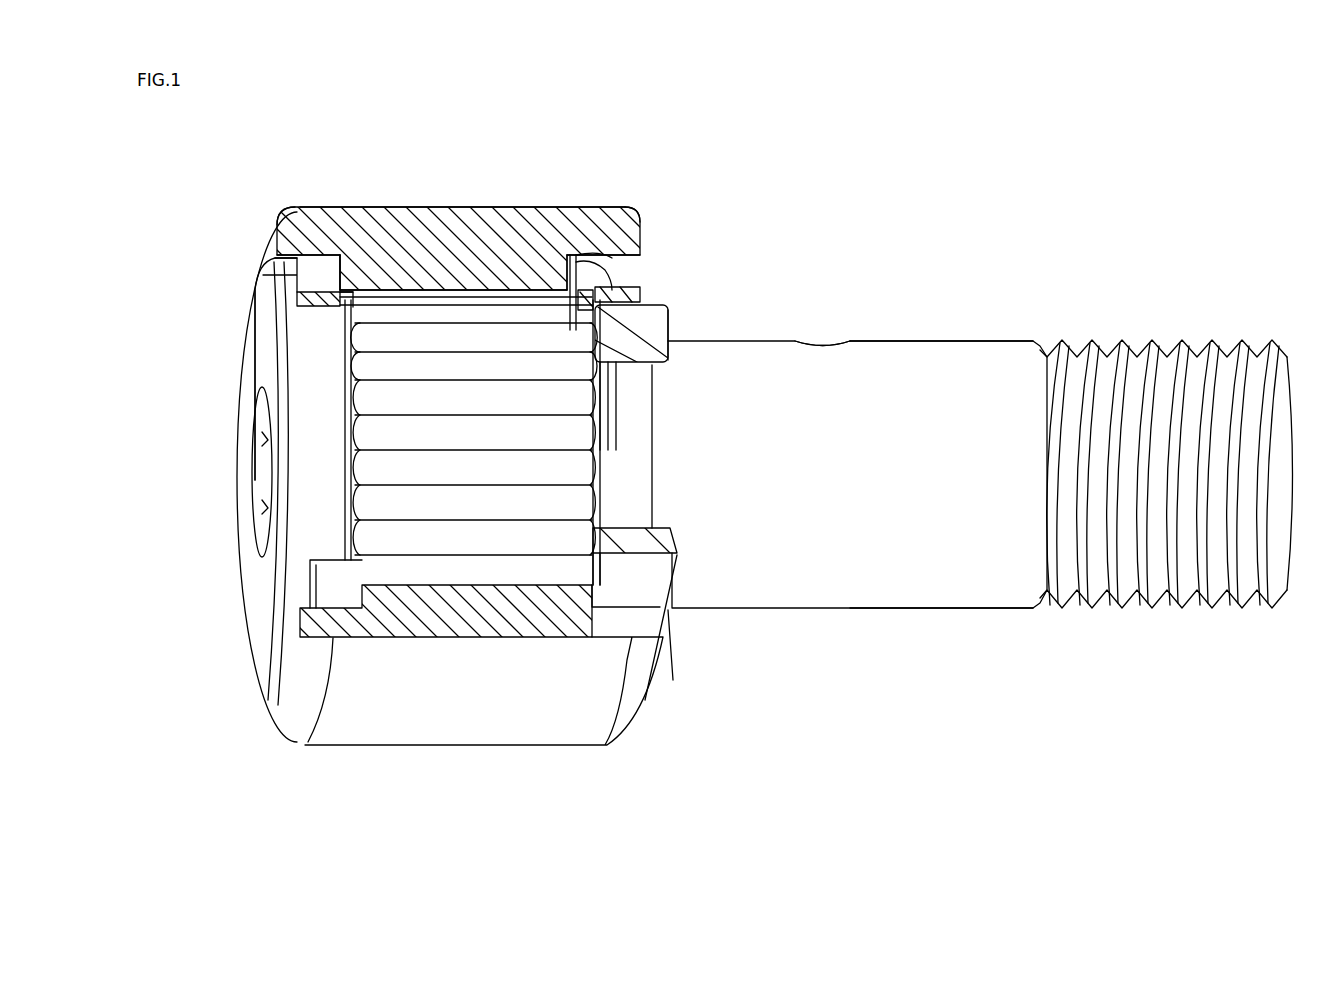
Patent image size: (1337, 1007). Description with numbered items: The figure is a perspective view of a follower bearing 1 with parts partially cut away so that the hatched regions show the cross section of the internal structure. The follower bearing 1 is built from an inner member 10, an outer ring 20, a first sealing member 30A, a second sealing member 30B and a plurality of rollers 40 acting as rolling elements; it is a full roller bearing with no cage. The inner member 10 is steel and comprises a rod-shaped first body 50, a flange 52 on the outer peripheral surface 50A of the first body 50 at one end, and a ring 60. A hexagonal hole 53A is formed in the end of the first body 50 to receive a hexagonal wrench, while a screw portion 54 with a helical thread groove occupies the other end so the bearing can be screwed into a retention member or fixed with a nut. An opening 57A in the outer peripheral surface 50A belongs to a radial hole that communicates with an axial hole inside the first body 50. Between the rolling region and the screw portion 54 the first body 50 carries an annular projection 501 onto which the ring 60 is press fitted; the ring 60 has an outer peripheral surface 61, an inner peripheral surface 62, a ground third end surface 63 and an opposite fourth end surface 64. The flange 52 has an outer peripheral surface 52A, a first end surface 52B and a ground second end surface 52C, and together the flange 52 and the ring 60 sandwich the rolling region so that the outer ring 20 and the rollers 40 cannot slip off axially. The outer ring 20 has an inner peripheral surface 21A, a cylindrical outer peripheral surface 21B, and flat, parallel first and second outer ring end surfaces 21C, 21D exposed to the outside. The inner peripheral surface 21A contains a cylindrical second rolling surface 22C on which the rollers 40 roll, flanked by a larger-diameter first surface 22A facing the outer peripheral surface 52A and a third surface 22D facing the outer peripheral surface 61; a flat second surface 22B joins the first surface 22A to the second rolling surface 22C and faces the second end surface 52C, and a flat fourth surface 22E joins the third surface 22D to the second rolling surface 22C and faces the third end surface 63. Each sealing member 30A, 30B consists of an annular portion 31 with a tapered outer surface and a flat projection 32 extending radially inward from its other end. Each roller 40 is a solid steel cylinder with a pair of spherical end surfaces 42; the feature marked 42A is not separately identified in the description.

The follower bearing 1 is at (1236, 198).
The inner member 10 is at (825, 658).
The outer ring 20 is at (520, 227).
The inner peripheral surface 21A is at (645, 130).
The outer peripheral surface 21B is at (435, 207).
The first outer ring end surface 21C is at (272, 240).
The second outer ring end surface 21D is at (627, 235).
The first surface 22A is at (300, 207).
The second surface 22B is at (333, 250).
The second rolling surface 22C is at (505, 287).
The third surface 22D is at (622, 207).
The fourth surface 22E is at (582, 250).
The first sealing member 30A is at (290, 222).
The second sealing member 30B is at (738, 232).
The annular portion 31 is at (612, 287).
The projection 32 is at (612, 255).
The roller 40 is at (470, 430).
The end surface 42 is at (618, 550).
The cage end portion 42A is at (345, 537).
The first body 50 is at (813, 578).
The outer peripheral surface 50A is at (898, 612).
The annular projection 501 is at (678, 540).
The flange 52 is at (287, 290).
The outer peripheral surface 52A is at (290, 263).
The first end surface 52B is at (258, 318).
The second end surface 52C is at (340, 327).
The hexagonal hole 53A is at (262, 482).
The screw portion 54 is at (1166, 345).
The opening 57A is at (829, 343).
The ring 60 is at (645, 323).
The outer peripheral surface 61 is at (628, 292).
The inner peripheral surface 62 is at (660, 332).
The third end surface 63 is at (557, 290).
The fourth end surface 64 is at (665, 318).